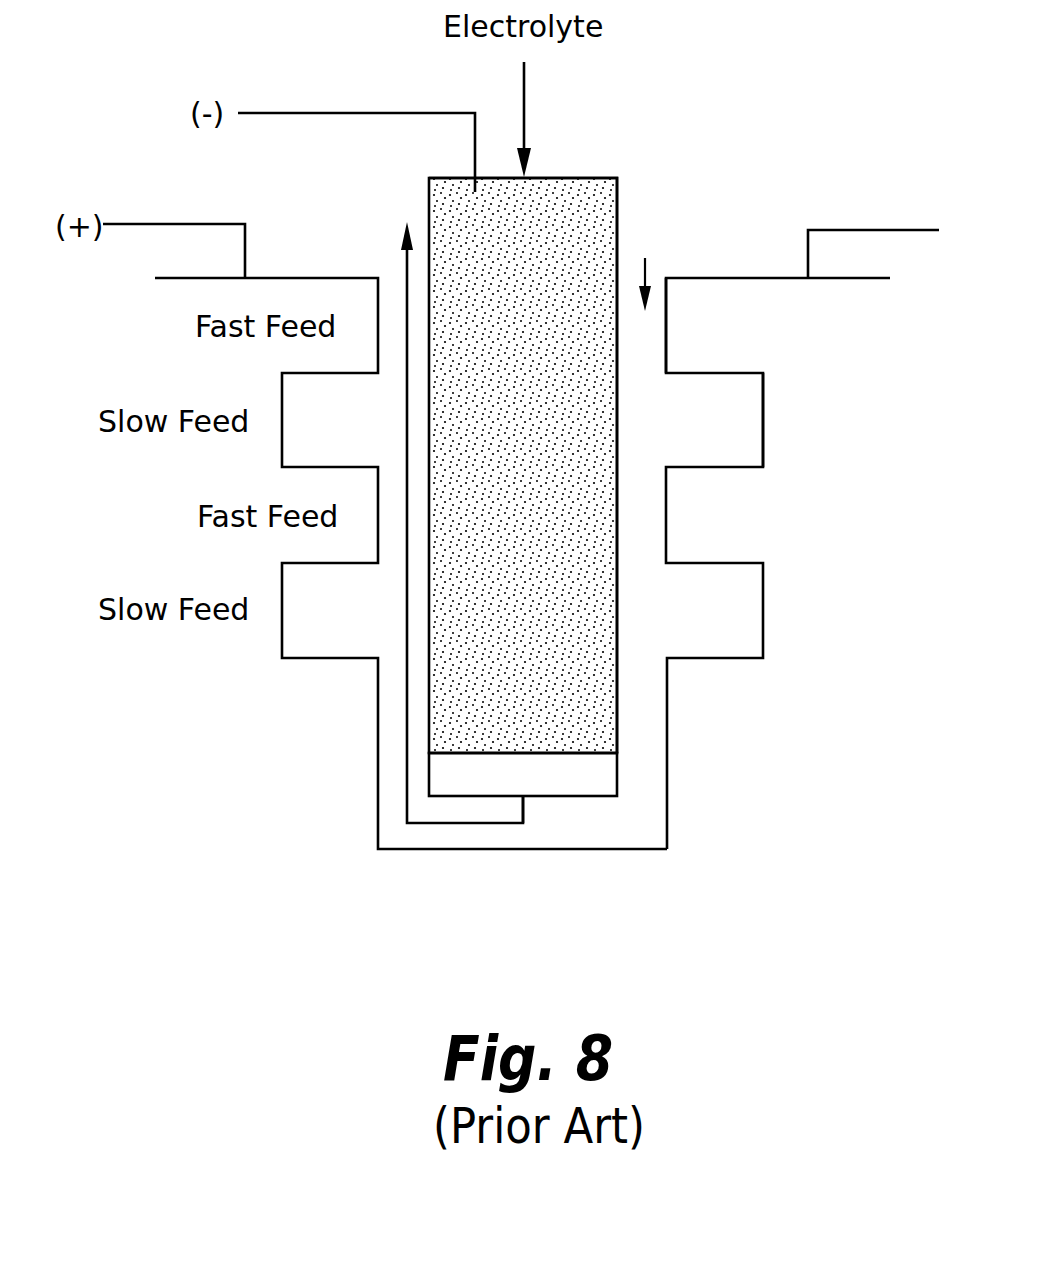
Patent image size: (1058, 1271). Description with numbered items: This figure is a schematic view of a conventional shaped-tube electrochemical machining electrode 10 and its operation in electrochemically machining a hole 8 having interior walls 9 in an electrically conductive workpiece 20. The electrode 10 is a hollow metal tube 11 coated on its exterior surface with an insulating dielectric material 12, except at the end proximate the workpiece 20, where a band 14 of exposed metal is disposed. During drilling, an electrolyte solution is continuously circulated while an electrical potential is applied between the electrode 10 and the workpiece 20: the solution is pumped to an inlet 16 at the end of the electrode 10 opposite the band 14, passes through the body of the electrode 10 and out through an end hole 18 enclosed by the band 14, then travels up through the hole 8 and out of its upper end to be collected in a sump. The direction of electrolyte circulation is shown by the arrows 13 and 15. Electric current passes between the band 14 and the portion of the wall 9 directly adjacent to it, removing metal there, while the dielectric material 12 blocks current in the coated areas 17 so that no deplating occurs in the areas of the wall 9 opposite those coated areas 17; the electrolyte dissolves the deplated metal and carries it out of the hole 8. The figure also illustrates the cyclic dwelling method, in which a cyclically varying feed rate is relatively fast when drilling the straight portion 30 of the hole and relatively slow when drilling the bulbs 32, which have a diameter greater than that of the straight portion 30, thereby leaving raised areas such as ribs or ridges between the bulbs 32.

The hole 8 is at (645, 260).
The interior walls 9 is at (380, 700).
The shaped-tube electrochemical machining electrode 10 is at (688, 217).
The hollow metal tube 11 is at (603, 178).
The insulating dielectric material 12 is at (427, 188).
The arrow 13 is at (522, 91).
The band of exposed metal 14 is at (600, 772).
The arrow 15 is at (403, 268).
The inlet 16 is at (528, 172).
The coated areas 17 is at (630, 418).
The end hole 18 is at (523, 800).
The electrically conductive workpiece 20 is at (770, 741).
The straight portion 30 is at (667, 326).
The bulbs 32 is at (763, 422).